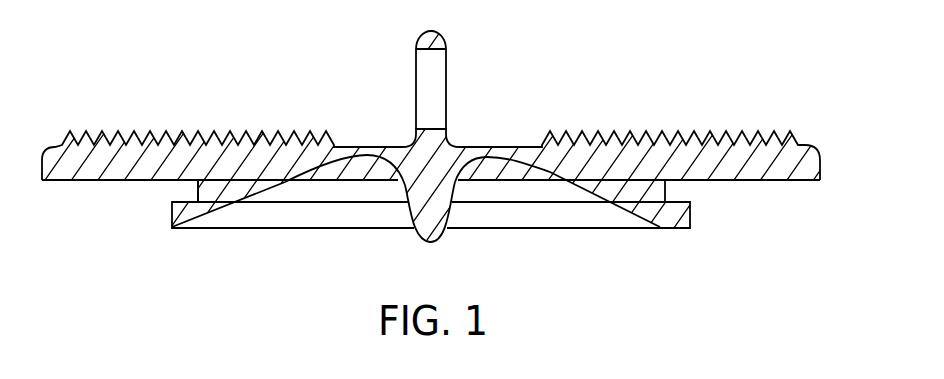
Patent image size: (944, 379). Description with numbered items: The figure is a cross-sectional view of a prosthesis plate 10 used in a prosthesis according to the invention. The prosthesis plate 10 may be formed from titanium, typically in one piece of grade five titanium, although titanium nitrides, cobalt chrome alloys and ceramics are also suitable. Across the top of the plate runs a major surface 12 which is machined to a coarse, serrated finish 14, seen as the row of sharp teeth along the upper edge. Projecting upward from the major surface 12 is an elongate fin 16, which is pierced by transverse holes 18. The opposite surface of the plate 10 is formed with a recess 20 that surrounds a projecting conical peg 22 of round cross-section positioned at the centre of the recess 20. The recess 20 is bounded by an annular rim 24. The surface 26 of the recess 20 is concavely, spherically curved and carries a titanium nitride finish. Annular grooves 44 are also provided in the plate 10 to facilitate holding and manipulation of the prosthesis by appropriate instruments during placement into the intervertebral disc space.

The prosthesis plate 10 is at (173, 88).
The major surface 12 is at (283, 119).
The serrated finish 14 is at (617, 131).
The elongate fin 16 is at (446, 100).
The transverse holes 18 is at (420, 103).
The recess 20 is at (308, 203).
The conical peg 22 is at (452, 208).
The annular rim 24 is at (683, 213).
The surface of the recess 26 is at (545, 173).
The annular grooves 44 is at (182, 192).